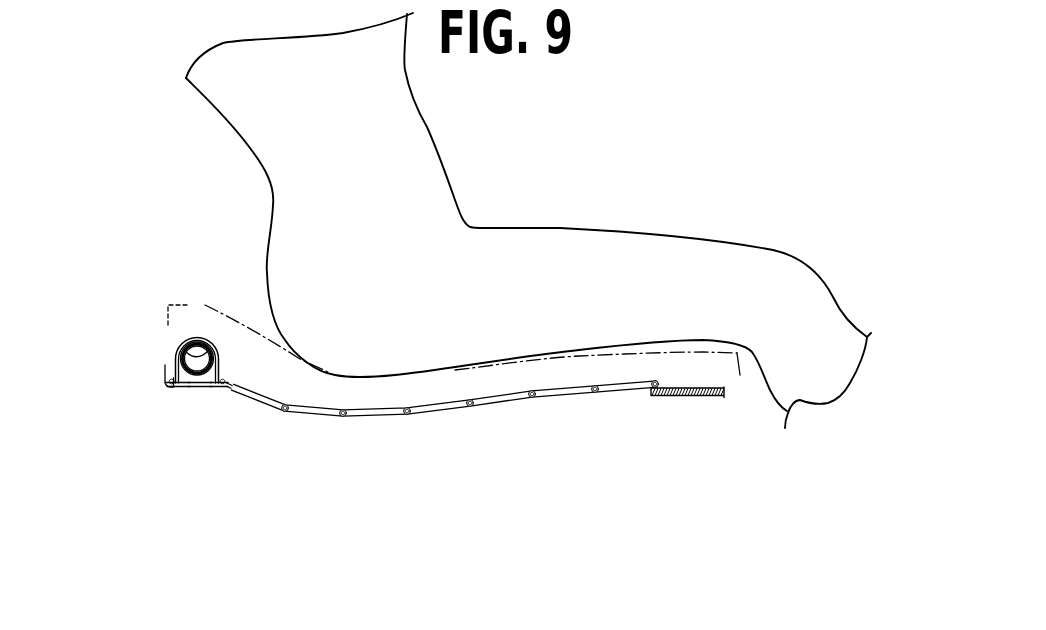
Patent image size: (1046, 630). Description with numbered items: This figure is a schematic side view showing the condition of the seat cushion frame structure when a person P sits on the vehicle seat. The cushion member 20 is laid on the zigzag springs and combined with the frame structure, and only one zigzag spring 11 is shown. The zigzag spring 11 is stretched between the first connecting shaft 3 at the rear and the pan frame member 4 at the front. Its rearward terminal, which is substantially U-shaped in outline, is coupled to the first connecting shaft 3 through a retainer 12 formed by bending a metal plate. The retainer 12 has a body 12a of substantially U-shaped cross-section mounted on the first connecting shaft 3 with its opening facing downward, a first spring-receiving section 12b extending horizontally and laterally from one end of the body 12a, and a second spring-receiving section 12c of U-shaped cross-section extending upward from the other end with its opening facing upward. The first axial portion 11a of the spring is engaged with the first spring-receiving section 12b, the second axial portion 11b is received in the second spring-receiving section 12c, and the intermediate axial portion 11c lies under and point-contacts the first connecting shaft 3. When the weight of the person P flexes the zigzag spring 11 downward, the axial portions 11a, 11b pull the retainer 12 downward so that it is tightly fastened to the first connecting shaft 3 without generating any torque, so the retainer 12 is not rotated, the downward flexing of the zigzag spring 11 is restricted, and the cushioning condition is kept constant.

The person P is at (561, 229).
The cushion member 20 is at (704, 353).
The retainer 12 is at (196, 339).
The first connecting shaft 3 is at (176, 356).
The body 12a is at (174, 366).
The second spring-receiving section 12c is at (165, 366).
The second axial portion 11b is at (170, 389).
The intermediate axial portion 11c is at (193, 388).
The first axial portion 11a is at (223, 388).
The first spring-receiving section 12b is at (230, 389).
The zigzag spring 11 is at (443, 412).
The pan frame member 4 is at (677, 397).